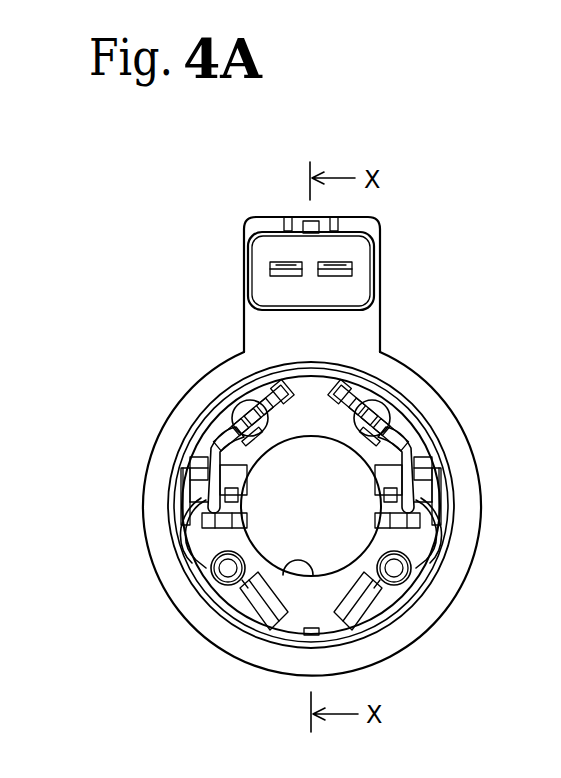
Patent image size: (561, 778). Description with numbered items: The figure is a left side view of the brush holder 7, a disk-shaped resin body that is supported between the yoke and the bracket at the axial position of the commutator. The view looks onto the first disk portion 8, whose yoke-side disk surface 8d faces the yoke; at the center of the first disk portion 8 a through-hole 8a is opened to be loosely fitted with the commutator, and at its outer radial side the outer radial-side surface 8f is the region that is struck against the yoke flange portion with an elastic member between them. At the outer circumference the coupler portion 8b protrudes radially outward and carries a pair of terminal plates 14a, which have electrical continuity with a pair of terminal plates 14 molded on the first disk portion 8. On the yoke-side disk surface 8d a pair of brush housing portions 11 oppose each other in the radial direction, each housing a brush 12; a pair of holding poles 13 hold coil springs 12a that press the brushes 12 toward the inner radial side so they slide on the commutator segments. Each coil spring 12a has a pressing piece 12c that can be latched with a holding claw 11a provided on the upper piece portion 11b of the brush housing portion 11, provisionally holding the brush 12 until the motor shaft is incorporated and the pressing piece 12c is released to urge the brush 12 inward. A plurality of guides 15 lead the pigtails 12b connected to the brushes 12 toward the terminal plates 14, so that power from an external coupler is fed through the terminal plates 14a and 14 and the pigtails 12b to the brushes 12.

The brush holder 7 is at (486, 226).
The first disk portion 8 is at (393, 308).
The through-hole 8a is at (290, 576).
The coupler portion 8b is at (259, 229).
The yoke-side disk surface 8d is at (315, 434).
The outer radial-side surface 8f is at (412, 632).
The brush housing portion 11 is at (178, 488).
The holding claw 11a is at (187, 545).
The upper piece portion 11b is at (447, 486).
The brush 12 is at (192, 512).
The coil spring 12a is at (221, 568).
The pigtail 12b is at (193, 457).
The pressing piece 12c is at (455, 518).
The holding pole 13 is at (398, 569).
The terminal plate 14 is at (236, 408).
The terminal plate 14a is at (359, 230).
The guide 15 is at (203, 440).